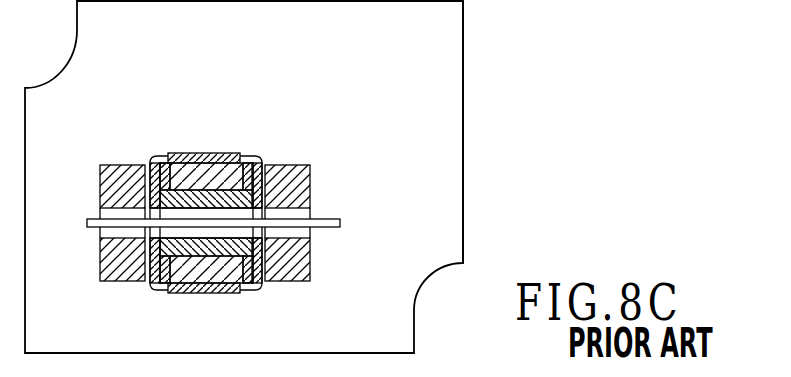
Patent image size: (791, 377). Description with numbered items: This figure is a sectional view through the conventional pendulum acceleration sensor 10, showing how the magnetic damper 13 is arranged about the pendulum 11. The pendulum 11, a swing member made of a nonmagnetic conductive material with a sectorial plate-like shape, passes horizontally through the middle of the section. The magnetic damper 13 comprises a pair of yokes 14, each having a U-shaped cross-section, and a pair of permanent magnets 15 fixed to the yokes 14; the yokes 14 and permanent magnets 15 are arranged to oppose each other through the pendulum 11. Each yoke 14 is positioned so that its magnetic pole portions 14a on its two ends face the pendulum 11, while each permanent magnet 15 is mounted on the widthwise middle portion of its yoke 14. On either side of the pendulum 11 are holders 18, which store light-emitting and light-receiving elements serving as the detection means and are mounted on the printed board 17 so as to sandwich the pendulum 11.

The pendulum acceleration sensor 10 is at (466, 93).
The pendulum 11 is at (328, 218).
The magnetic damper 13 is at (203, 189).
The yoke 14 is at (224, 157).
The magnetic pole portion 14a is at (148, 153).
The permanent magnet 15 is at (189, 157).
The printed board 17 is at (464, 205).
The holder 18 is at (99, 192).